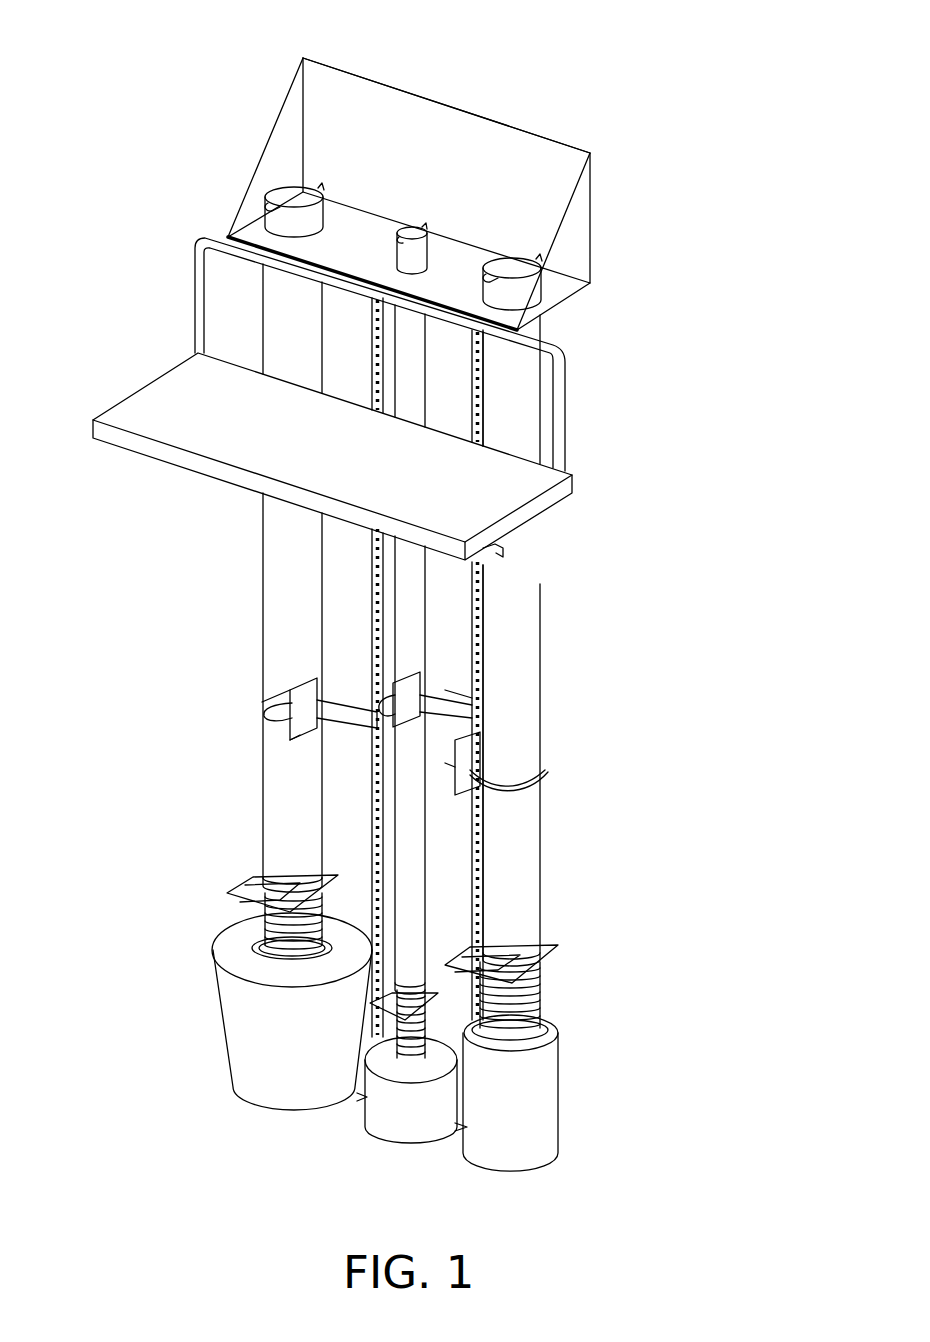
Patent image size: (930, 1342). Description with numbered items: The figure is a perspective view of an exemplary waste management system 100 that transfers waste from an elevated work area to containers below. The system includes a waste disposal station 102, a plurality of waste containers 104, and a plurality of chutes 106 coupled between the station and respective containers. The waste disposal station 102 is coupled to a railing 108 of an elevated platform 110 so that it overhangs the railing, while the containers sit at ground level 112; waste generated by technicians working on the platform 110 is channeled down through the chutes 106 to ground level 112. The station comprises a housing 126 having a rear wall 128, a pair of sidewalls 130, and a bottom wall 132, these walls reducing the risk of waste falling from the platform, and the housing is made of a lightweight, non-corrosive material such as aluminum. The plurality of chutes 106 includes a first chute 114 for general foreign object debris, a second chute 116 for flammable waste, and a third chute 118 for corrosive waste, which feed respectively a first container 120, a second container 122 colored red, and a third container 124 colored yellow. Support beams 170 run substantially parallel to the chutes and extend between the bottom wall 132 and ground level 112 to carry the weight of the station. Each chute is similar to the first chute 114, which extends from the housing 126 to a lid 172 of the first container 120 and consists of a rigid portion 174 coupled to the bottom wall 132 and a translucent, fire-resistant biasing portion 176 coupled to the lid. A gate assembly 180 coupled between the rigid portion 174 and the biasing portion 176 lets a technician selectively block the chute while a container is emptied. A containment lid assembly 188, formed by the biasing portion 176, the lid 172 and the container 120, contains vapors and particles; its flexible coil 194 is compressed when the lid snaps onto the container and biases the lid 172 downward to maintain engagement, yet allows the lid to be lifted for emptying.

The waste management system 100 is at (118, 95).
The waste disposal station 102 is at (411, 188).
The plurality of waste containers 104 is at (340, 1006).
The plurality of chutes 106 is at (336, 650).
The railing 108 is at (566, 384).
The elevated platform 110 is at (560, 484).
The ground level 112 is at (668, 1152).
The first chute 114 is at (270, 637).
The second chute 116 is at (413, 878).
The third chute 118 is at (523, 745).
The first container 120 is at (243, 1010).
The second container 122 is at (392, 1120).
The third container 124 is at (523, 1157).
The housing 126 is at (440, 103).
The rear wall 128 is at (382, 103).
The sidewalls 130 is at (283, 134).
The bottom wall 132 is at (243, 236).
The support beam 170 is at (375, 652).
The lid 172 is at (243, 964).
The rigid portion 174 is at (285, 535).
The biasing portion 176 is at (290, 912).
The gate assembly 180 is at (253, 868).
The containment lid assembly 188 is at (253, 930).
The flexible coil 194 is at (318, 906).